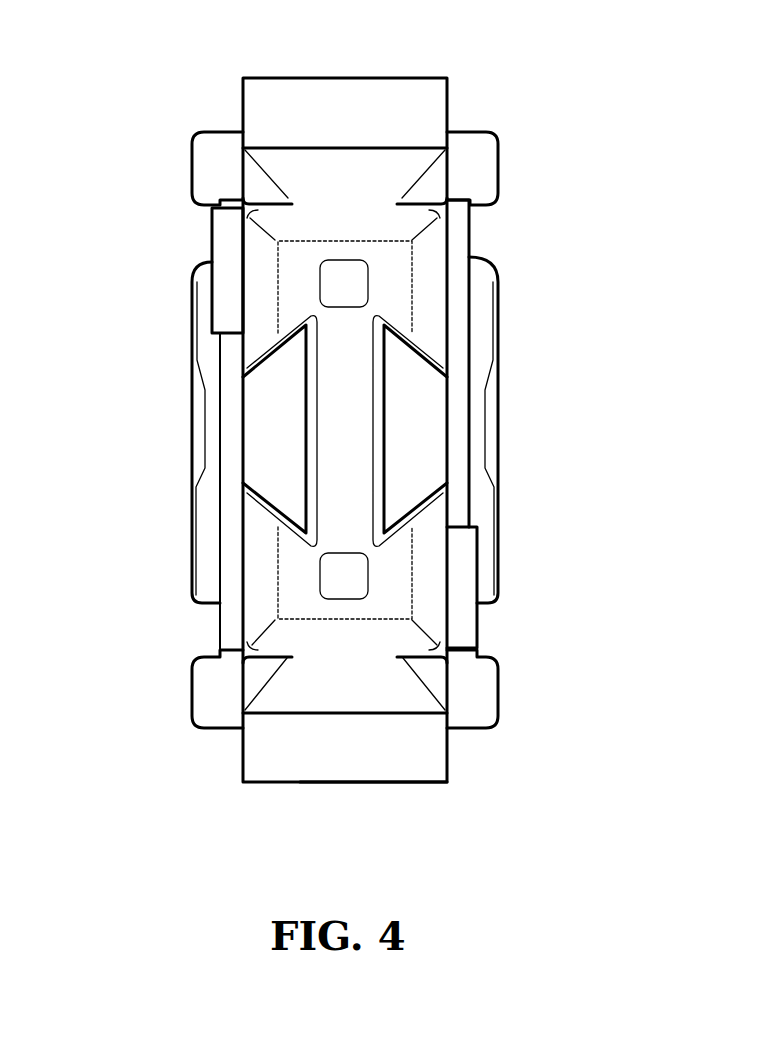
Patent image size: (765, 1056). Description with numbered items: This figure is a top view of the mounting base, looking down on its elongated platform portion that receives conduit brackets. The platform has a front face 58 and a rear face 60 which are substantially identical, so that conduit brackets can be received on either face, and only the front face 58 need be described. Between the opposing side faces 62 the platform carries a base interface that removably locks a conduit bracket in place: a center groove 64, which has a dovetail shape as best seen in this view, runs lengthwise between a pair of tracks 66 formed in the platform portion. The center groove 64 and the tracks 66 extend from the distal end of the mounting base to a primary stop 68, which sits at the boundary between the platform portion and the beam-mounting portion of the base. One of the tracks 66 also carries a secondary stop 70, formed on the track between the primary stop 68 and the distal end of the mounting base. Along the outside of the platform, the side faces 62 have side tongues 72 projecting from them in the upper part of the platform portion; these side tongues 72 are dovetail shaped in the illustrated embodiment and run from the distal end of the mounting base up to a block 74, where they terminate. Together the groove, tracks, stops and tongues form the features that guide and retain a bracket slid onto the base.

The front face 58 is at (450, 250).
The rear face 60 is at (238, 267).
The side faces 62 is at (490, 133).
The center groove 64 is at (440, 403).
The tracks 66 is at (450, 305).
The primary stop 68 is at (470, 220).
The secondary stop 70 is at (480, 627).
The side tongues 72 is at (348, 148).
The block 74 is at (410, 782).